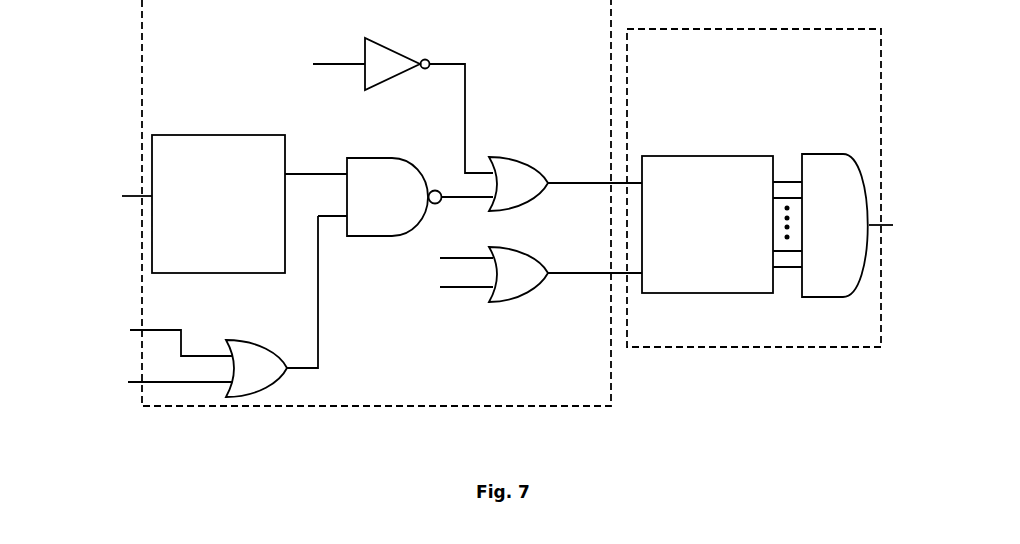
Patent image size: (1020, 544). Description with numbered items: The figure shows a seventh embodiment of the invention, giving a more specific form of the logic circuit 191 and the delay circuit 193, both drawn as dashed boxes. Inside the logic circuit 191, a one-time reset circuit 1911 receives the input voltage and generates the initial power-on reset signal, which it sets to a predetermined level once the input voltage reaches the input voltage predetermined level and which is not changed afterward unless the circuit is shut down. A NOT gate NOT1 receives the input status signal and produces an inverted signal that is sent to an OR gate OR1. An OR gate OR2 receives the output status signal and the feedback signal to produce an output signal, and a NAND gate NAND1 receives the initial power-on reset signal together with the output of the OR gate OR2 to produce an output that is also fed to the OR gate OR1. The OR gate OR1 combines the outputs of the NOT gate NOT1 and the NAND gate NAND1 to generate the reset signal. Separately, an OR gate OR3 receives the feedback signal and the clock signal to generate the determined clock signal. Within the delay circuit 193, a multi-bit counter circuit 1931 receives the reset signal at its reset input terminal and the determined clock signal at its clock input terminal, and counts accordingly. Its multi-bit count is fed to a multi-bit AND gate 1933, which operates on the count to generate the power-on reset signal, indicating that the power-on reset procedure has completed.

The logic circuit 191 is at (197, 20).
The one-time reset circuit 1911 is at (207, 264).
The delay circuit 193 is at (675, 60).
The multi-bit counter circuit 1931 is at (765, 288).
The multi-bit AND gate 1933 is at (832, 153).
The NOT gate NOT1 is at (393, 50).
The NAND gate NAND1 is at (377, 158).
The OR gate OR1 is at (510, 155).
The OR gate OR2 is at (270, 386).
The OR gate OR3 is at (522, 297).